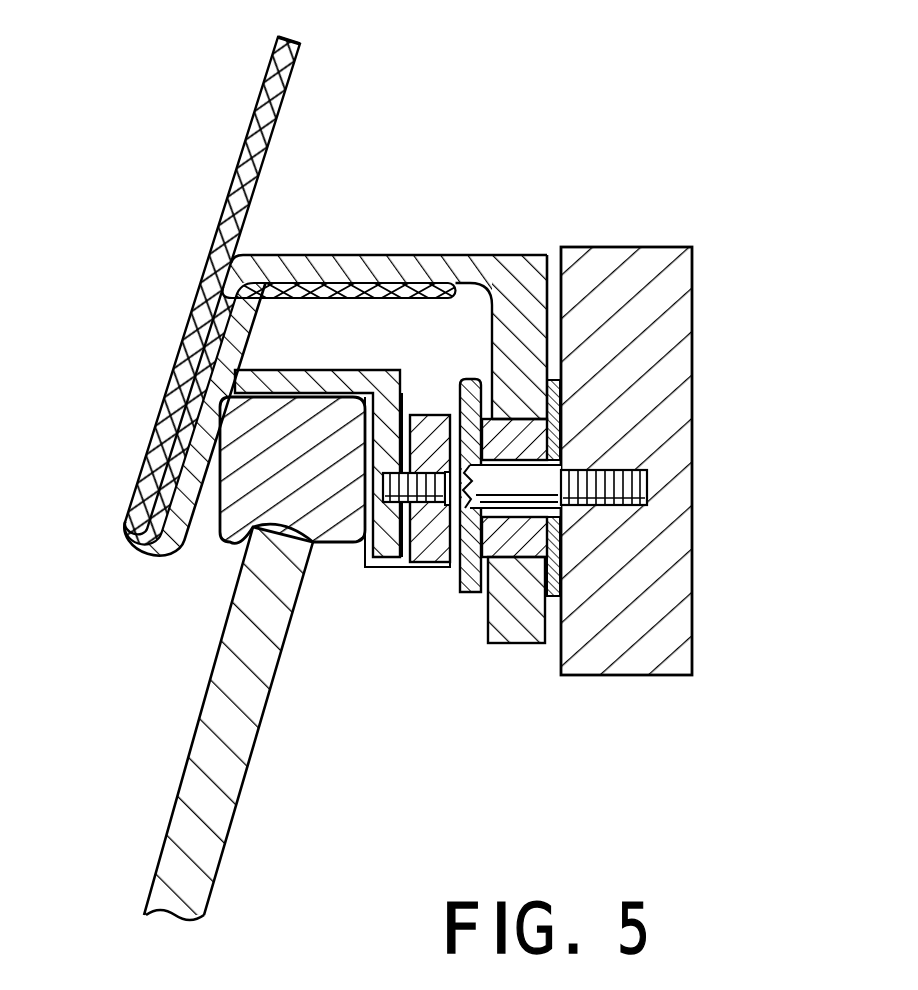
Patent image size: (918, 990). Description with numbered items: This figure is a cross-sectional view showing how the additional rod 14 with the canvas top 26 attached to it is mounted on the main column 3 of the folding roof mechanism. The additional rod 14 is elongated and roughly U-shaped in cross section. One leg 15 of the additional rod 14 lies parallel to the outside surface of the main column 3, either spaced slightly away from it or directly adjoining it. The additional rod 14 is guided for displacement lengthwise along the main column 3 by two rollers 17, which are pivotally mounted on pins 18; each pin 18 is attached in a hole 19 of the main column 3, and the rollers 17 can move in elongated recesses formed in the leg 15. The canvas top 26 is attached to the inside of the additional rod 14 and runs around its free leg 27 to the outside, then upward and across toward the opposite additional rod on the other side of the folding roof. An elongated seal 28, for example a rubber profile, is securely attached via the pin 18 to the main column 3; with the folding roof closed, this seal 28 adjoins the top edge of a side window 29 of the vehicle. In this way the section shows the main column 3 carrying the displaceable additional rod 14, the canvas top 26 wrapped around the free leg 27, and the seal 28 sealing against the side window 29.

The main column 3 is at (650, 338).
The additional rod 14 is at (418, 216).
The leg 15 is at (525, 332).
The roller 17 is at (497, 493).
The pin 18 is at (457, 580).
The hole 19 is at (647, 488).
The canvas top 26 is at (256, 134).
The free leg 27 is at (178, 444).
The elongated seal 28 is at (275, 496).
The side window 29 is at (190, 820).